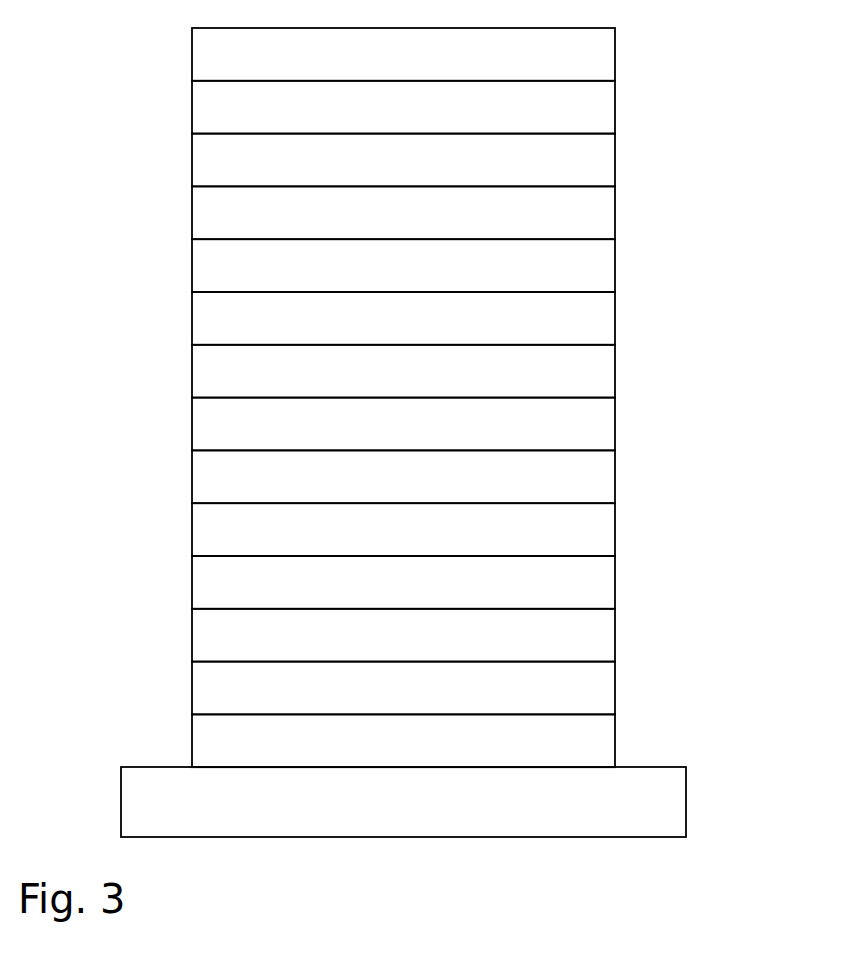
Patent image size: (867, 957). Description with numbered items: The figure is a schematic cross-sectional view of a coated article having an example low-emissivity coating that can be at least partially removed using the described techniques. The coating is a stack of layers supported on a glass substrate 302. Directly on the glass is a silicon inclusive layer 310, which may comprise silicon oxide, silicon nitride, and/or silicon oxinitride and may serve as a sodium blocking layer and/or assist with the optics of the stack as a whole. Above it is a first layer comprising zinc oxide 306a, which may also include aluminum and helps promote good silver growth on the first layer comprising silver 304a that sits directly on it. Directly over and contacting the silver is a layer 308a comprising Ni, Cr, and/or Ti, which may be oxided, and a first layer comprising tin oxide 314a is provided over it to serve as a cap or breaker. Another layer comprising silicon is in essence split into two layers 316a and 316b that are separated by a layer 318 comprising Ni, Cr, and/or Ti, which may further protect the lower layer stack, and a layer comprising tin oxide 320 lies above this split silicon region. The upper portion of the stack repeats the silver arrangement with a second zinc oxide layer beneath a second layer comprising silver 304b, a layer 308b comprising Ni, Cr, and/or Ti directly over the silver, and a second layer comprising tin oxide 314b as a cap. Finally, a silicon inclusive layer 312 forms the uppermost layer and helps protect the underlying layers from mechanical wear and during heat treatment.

The substrate 302 is at (686, 800).
The silicon inclusive layer 310 is at (615, 741).
The first layer comprising zinc oxide 306a is at (615, 266).
The first layer comprising silver 304a is at (615, 635).
The first layer comprising Ni, Cr, and/or Ti 308a is at (615, 582).
The first layer comprising tin oxide 314a is at (615, 530).
The lower split layer comprising silicon 316a is at (615, 477).
The layer comprising Ni, Cr, and/or Ti 318 is at (615, 424).
The upper split layer comprising silicon 316b is at (615, 371).
The layer comprising tin oxide 320 is at (615, 318).
The second layer comprising silver 304b is at (615, 213).
The second layer comprising Ni, Cr, and/or Ti 308b is at (615, 160).
The second layer comprising tin oxide 314b is at (615, 107).
The silicon inclusive layer 312 is at (615, 54).